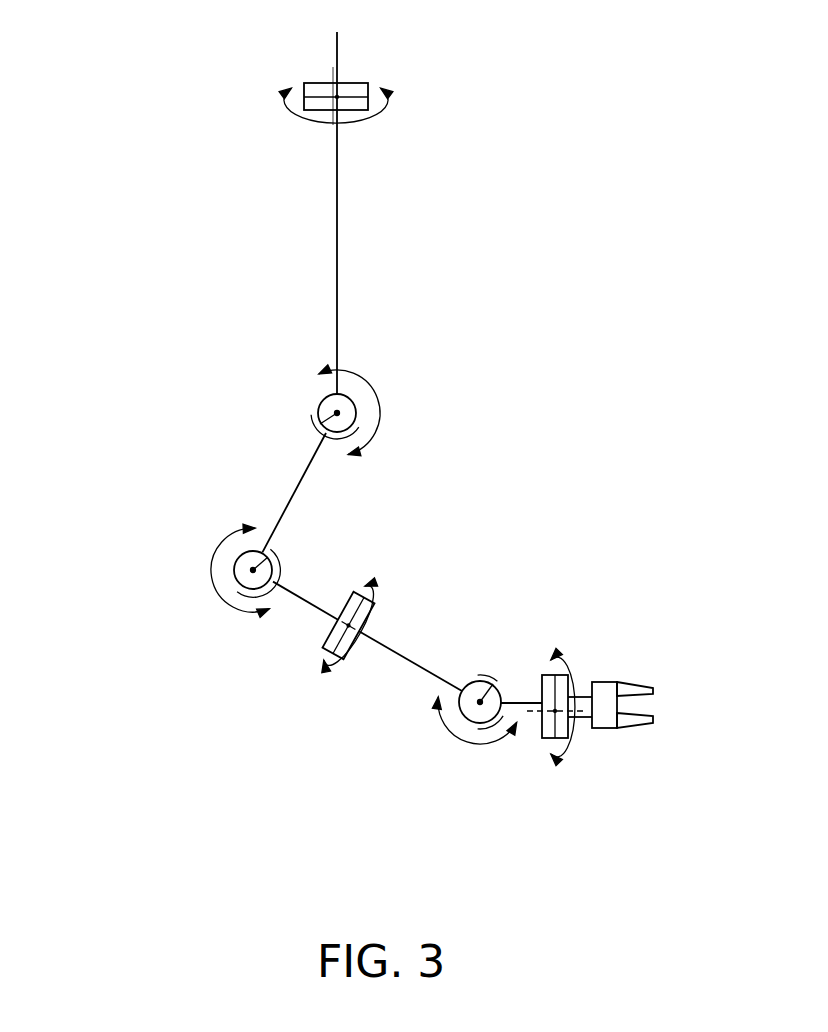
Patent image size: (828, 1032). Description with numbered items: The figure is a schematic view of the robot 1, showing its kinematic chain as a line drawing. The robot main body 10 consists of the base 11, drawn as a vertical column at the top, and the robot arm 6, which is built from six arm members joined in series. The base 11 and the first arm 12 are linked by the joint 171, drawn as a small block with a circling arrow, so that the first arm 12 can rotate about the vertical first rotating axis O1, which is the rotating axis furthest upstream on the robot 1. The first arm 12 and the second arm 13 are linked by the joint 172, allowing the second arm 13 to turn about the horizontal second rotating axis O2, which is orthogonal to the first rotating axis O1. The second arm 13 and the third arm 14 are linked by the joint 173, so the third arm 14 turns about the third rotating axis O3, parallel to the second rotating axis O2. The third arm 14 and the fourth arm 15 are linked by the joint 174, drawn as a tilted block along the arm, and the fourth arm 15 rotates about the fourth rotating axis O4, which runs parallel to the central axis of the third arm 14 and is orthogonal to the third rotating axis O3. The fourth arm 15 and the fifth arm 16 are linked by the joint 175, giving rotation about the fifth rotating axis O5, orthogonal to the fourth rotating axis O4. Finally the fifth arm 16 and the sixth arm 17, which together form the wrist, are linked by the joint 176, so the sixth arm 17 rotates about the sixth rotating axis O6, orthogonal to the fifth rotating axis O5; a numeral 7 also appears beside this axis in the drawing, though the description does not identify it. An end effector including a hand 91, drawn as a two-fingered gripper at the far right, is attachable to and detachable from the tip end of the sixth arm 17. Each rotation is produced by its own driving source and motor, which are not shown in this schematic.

The robot 1 is at (188, 636).
The robot arm 6 is at (178, 428).
The rotation axis of hand 7 is at (551, 716).
The robot main body 10 is at (200, 518).
The base 11 is at (322, 48).
The first arm 12 is at (318, 247).
The second arm 13 is at (322, 495).
The third arm 14 is at (255, 633).
The fourth arm 15 is at (427, 732).
The fifth arm 16 is at (522, 695).
The sixth arm 17 is at (566, 648).
The hand 91 is at (605, 717).
The joint 171 is at (276, 112).
The joint 172 is at (297, 447).
The joint 173 is at (290, 565).
The joint 174 is at (317, 677).
The joint 175 is at (463, 668).
The joint 176 is at (550, 770).
The first rotating axis O1 is at (332, 127).
The second rotating axis O2 is at (320, 424).
The third rotating axis O3 is at (268, 557).
The fourth rotating axis O4 is at (335, 625).
The fifth rotating axis O5 is at (497, 670).
The sixth rotating axis O6 is at (527, 717).